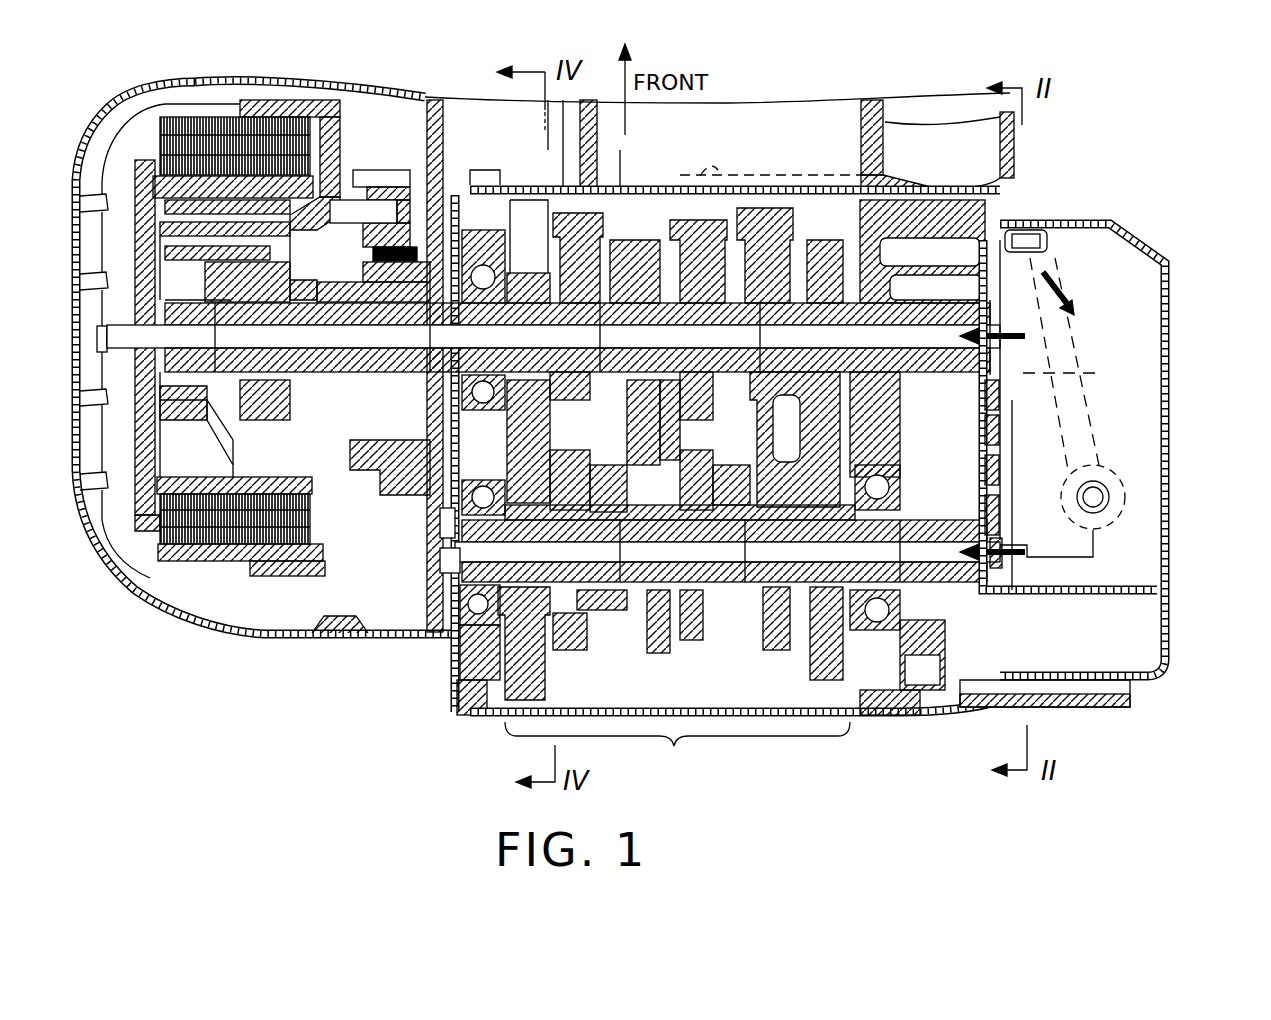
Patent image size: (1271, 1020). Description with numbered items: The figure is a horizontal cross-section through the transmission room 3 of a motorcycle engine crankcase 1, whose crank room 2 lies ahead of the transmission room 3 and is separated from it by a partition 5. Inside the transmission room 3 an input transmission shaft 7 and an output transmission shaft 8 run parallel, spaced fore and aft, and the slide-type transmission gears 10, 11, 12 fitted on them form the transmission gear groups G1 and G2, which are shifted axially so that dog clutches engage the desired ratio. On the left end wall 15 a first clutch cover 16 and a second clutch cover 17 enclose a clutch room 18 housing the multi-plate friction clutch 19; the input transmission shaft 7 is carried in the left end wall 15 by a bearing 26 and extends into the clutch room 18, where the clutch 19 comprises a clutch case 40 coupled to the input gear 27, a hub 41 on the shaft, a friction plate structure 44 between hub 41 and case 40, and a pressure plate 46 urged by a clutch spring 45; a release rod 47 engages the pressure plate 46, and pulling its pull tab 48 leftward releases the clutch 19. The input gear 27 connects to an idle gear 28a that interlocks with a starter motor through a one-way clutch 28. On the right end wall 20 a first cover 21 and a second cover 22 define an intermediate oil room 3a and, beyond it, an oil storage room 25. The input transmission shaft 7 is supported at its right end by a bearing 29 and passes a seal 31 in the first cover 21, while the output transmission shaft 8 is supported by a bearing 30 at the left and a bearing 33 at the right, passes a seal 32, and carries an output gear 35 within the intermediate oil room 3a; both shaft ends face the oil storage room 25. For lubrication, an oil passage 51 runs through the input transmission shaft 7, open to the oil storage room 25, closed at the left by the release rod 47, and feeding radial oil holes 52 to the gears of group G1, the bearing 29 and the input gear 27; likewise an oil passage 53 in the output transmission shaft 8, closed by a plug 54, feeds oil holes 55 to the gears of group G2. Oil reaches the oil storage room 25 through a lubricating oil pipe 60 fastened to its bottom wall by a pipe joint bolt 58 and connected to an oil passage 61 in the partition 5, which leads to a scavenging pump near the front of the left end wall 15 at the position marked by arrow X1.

The crankcase 1 is at (882, 128).
The crank room 2 is at (772, 148).
The transmission room 3 is at (694, 706).
The intermediate oil room 3a is at (985, 466).
The partition 5 is at (806, 193).
The input transmission shaft 7 is at (887, 412).
The output transmission shaft 8 is at (912, 613).
The transmission gear 10 is at (662, 211).
The transmission gear 11 is at (780, 652).
The transmission gear 12 is at (566, 648).
The left end wall 15 is at (458, 688).
The first clutch cover 16 is at (338, 634).
The second clutch cover 17 is at (138, 596).
The clutch room 18 is at (305, 614).
The multi-plate friction clutch 19 is at (128, 136).
The right end wall 20 is at (885, 716).
The first cover 21 is at (1028, 236).
The second cover 22 is at (1141, 234).
The oil storage room 25 is at (1077, 312).
The bearing 26 is at (470, 235).
The input gear 27 is at (358, 168).
The one-way clutch 28 is at (395, 186).
The idle gear 28a is at (427, 110).
The bearing 29 is at (888, 255).
The bearing 30 is at (452, 640).
The seal 31 is at (999, 400).
The seal 32 is at (995, 540).
The bearing 33 is at (932, 646).
The output gear 35 is at (945, 710).
The clutch case 40 is at (325, 100).
The hub 41 is at (135, 208).
The friction plate structure 44 is at (190, 118).
The clutch spring 45 is at (136, 250).
The pressure plate 46 is at (104, 192).
The release rod 47 is at (187, 397).
The pull tab 48 is at (97, 337).
The oil passage 51 is at (986, 416).
The oil holes 52 is at (363, 266).
The oil passage 53 is at (1010, 566).
The plug 54 is at (444, 561).
The oil holes 55 is at (747, 480).
The pipe joint bolt 58 is at (1125, 497).
The lubricating oil pipe 60 is at (1012, 234).
The oil passage 61 is at (808, 175).
The transmission gear group G1 is at (717, 137).
The transmission gear group G2 is at (677, 757).
The arrow X1 is at (530, 232).